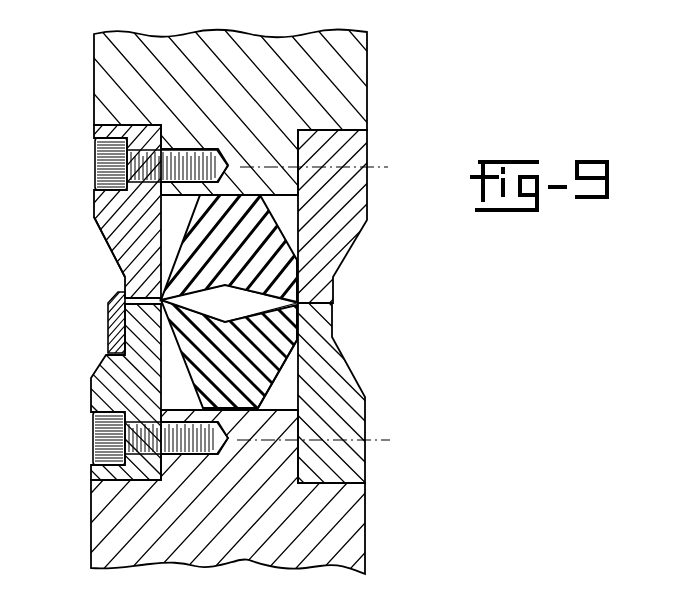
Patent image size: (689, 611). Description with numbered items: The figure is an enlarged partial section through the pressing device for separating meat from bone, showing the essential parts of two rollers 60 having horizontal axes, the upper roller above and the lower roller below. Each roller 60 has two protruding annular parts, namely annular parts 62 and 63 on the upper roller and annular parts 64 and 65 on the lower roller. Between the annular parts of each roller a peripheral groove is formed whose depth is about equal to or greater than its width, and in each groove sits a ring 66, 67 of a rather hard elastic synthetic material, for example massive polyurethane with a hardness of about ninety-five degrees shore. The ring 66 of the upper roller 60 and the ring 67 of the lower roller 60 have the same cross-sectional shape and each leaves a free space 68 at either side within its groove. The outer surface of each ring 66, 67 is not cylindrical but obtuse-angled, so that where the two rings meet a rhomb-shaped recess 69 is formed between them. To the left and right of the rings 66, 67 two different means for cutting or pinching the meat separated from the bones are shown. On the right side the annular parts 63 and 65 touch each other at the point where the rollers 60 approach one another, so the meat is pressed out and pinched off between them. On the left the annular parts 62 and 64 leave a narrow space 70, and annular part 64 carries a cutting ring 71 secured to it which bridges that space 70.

The rollers 60 is at (345, 62).
The annular part 62 is at (140, 244).
The annular part 63 is at (333, 202).
The annular part 64 is at (127, 395).
The annular part 65 is at (330, 412).
The ring 66 is at (270, 261).
The ring 67 is at (258, 341).
The free space 68 is at (105, 231).
The rhomb-shaped recess 69 is at (223, 302).
The narrow space 70 is at (146, 284).
The cutting ring 71 is at (108, 322).